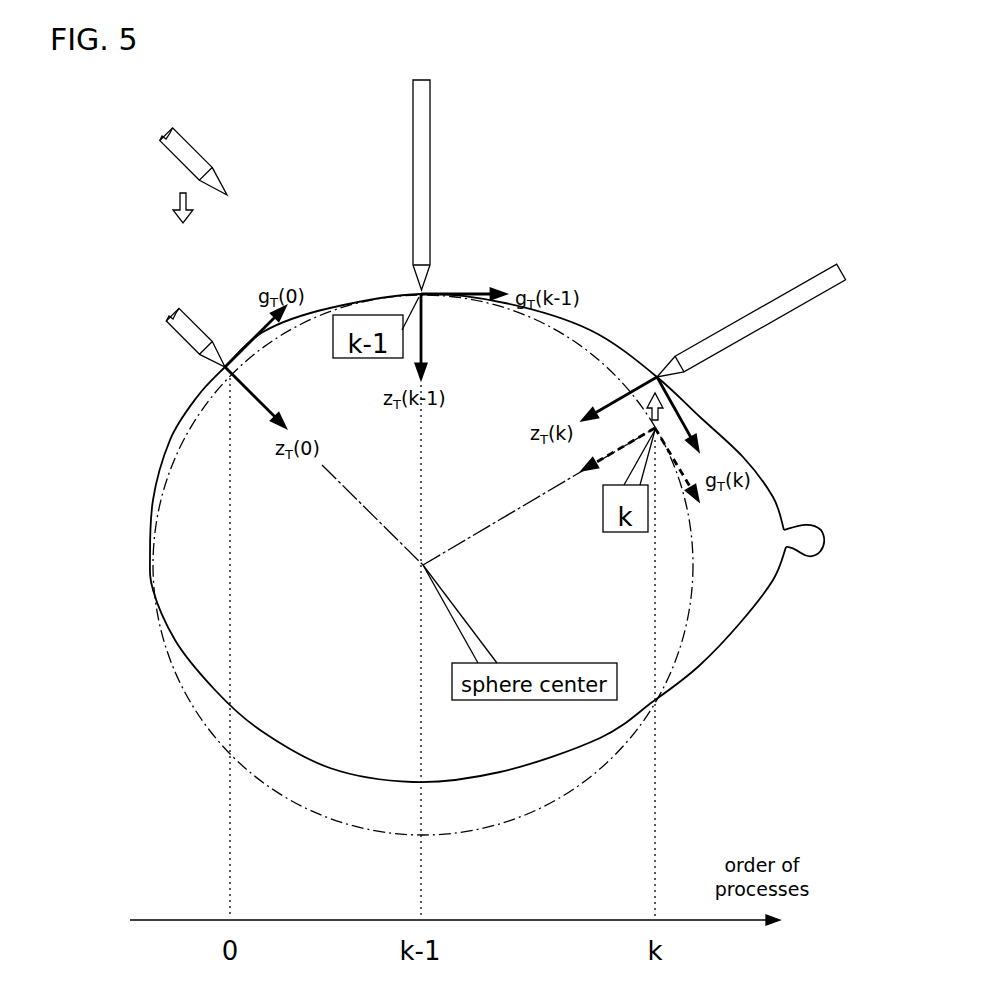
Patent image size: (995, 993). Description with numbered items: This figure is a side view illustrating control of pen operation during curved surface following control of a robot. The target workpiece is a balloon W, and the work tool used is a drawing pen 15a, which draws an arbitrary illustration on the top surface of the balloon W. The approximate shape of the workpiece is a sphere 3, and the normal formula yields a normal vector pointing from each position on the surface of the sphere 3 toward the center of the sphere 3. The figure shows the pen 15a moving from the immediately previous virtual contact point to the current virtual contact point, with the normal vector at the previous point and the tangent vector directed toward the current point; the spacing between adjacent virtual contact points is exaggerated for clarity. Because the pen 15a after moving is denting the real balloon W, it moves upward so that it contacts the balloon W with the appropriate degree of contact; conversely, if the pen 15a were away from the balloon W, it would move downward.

The drawing pen 15a is at (191, 148).
The sphere 3 is at (176, 680).
The balloon W is at (741, 625).